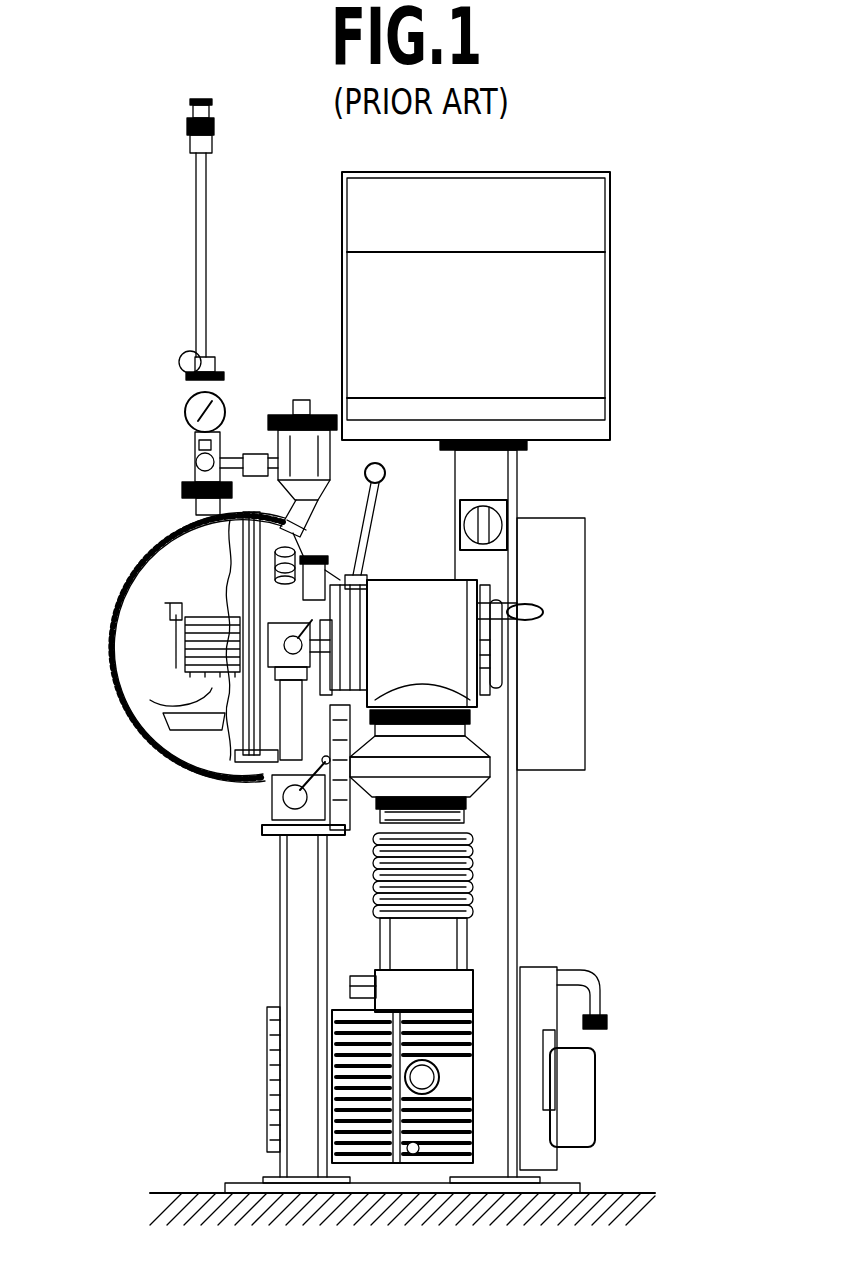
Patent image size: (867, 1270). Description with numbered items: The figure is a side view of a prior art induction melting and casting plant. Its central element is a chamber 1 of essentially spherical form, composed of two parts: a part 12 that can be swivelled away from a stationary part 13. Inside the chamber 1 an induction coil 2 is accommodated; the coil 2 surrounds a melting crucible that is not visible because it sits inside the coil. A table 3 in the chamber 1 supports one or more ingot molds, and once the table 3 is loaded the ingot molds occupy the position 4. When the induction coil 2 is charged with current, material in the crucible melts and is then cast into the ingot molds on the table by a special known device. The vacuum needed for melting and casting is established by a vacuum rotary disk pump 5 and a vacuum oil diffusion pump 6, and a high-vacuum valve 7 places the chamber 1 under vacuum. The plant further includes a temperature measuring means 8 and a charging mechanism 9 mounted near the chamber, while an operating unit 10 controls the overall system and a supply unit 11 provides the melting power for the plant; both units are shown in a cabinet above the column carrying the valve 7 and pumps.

The chamber 1 is at (157, 680).
The induction coil 2 is at (178, 640).
The table 3 is at (205, 727).
The position 4 is at (207, 723).
The vacuum rotary disk pump 5 is at (533, 1085).
The vacuum oil diffusion pump 6 is at (473, 880).
The high-vacuum valve 7 is at (428, 612).
The temperature measuring means 8 is at (200, 238).
The charging mechanism 9 is at (295, 440).
The operating unit 10 is at (563, 218).
The supply unit 11 is at (580, 303).
The part 12 is at (112, 632).
The part 13 is at (243, 752).